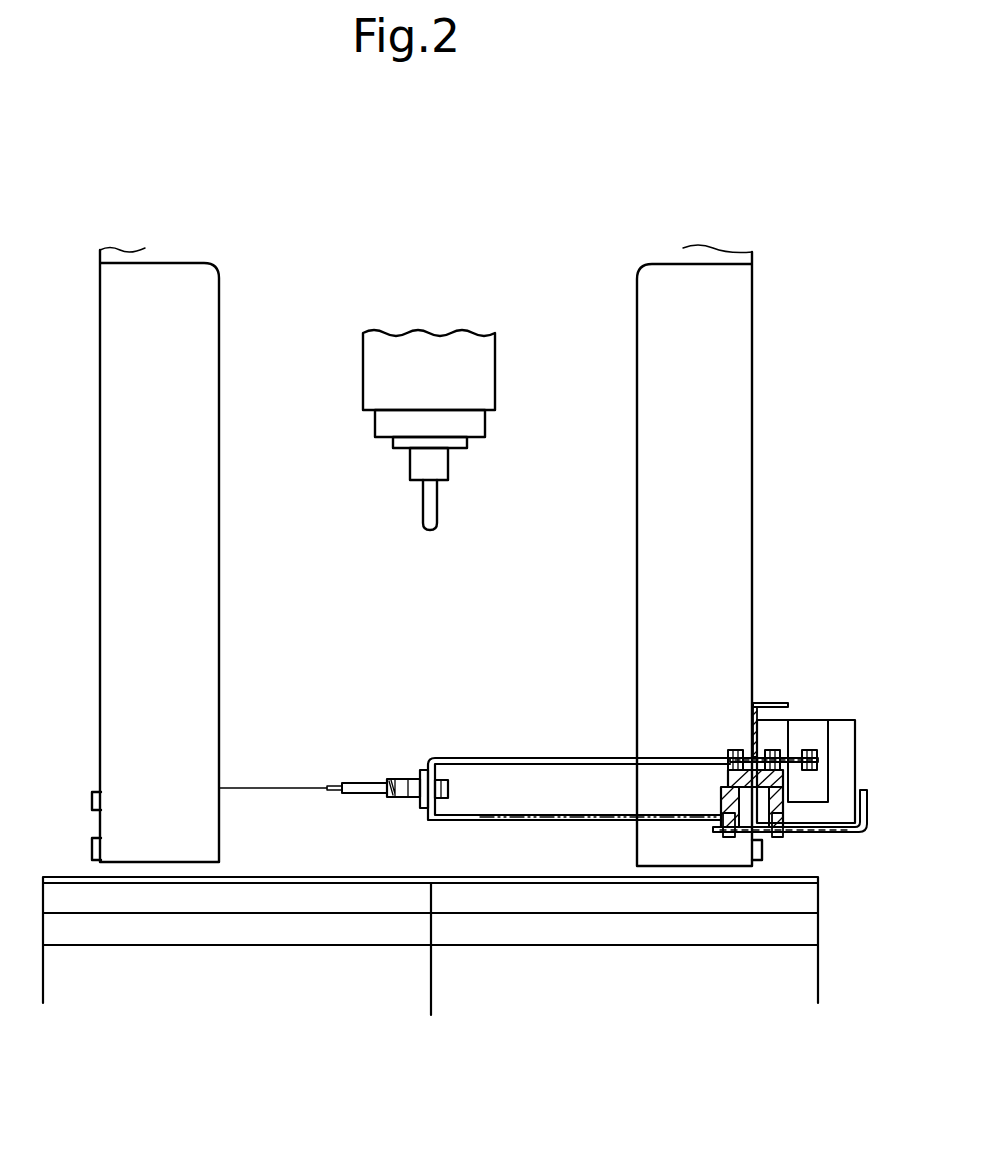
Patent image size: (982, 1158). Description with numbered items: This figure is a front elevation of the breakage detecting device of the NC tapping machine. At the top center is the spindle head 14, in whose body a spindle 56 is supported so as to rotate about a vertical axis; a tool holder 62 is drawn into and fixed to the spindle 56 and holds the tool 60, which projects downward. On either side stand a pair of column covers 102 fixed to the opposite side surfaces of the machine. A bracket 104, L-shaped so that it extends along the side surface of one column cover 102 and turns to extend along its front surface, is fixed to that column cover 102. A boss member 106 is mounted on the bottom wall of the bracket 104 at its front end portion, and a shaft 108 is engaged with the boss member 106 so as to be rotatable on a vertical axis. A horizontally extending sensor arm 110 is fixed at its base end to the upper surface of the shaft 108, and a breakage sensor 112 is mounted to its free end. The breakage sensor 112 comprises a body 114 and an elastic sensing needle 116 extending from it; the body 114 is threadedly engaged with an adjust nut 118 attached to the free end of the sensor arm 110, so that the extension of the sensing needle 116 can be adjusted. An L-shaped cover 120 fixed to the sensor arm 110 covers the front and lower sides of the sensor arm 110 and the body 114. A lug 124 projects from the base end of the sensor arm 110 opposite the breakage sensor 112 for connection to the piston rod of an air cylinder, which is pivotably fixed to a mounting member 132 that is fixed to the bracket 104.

The spindle head 14 is at (510, 361).
The spindle 56 is at (460, 445).
The tool 60 is at (430, 510).
The tool holder 62 is at (438, 467).
The column cover 102 is at (200, 587).
The bracket 104 is at (765, 703).
The boss member 106 is at (728, 802).
The shaft 108 is at (757, 812).
The sensor arm 110 is at (545, 757).
The breakage sensor 112 is at (474, 758).
The body 114 is at (402, 779).
The sensing needle 116 is at (273, 787).
The adjust nut 118 is at (422, 800).
The L-shaped cover 120 is at (556, 822).
The lug 124 is at (818, 759).
The mounting member 132 is at (810, 739).